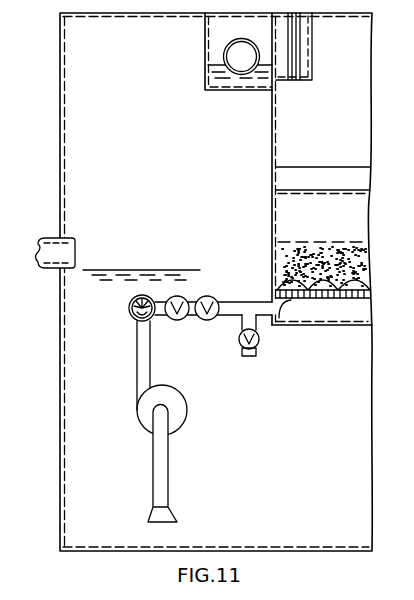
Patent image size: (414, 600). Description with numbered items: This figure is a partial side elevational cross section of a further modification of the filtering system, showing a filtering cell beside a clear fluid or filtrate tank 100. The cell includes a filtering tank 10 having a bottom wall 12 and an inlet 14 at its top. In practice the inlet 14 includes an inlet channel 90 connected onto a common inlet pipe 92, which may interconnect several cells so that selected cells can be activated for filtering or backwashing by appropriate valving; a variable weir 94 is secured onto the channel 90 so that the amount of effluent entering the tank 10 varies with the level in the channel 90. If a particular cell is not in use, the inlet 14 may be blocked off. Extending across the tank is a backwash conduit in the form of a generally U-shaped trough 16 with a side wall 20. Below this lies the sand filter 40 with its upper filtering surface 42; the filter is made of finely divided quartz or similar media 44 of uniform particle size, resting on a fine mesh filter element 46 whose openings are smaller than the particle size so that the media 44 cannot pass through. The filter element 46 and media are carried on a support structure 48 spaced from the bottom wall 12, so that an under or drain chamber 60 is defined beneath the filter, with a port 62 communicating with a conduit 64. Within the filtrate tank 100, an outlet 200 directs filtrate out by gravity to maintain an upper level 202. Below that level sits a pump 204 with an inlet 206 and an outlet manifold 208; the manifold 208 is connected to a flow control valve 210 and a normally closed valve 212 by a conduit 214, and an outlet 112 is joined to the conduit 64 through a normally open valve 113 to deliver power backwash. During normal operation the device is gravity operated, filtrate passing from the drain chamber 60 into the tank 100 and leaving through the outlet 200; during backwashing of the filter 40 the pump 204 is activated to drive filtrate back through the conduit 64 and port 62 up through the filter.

The filtrate tank 100 is at (126, 10).
The filtering tank 10 is at (372, 59).
The bottom wall 12 is at (358, 327).
The inlet 14 is at (312, 31).
The trough 16 is at (315, 168).
The side wall 20 is at (358, 178).
The sand filter 40 is at (331, 254).
The upper filtering surface 42 is at (307, 243).
The media 44 is at (277, 247).
The filter element 46 is at (365, 281).
The support structure 48 is at (350, 296).
The drain chamber 60 is at (319, 307).
The port 62 is at (284, 319).
The conduit 64 is at (253, 302).
The inlet channel 90 is at (205, 50).
The inlet pipe 92 is at (233, 41).
The variable weir 94 is at (297, 78).
The outlet 112 is at (240, 349).
The normally open valve 113 is at (258, 347).
The outlet 200 is at (68, 240).
The upper level 202 is at (136, 268).
The pump 204 is at (187, 410).
The inlet 206 is at (168, 470).
The outlet manifold 208 is at (129, 309).
The flow control valve 210 is at (176, 321).
The normally closed valve 212 is at (207, 321).
The conduit 214 is at (214, 289).